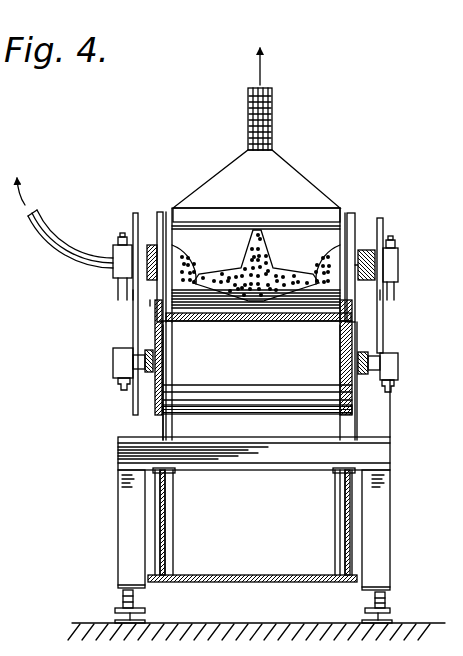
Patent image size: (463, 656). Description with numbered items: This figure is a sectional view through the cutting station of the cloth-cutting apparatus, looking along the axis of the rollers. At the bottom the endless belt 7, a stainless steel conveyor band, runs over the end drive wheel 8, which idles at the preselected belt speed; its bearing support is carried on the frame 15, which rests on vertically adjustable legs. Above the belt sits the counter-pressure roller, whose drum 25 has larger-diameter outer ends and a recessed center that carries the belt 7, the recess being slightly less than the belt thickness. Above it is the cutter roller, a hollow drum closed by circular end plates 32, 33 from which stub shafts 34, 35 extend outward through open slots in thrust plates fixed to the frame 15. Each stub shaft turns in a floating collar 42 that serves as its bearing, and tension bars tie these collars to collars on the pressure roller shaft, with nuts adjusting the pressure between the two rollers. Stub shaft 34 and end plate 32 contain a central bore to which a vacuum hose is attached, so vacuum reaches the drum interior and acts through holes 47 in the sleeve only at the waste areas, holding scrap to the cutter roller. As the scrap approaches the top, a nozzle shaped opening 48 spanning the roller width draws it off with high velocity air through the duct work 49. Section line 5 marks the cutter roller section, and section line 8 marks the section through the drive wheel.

The garment blank transfer system 5 is at (237, 318).
The endless belt 7 is at (234, 576).
The end drive wheel 8 is at (148, 190).
The frame 15 is at (391, 380).
The drum 25 is at (257, 391).
The circular end plate 32 is at (163, 212).
The circular end plate 33 is at (351, 213).
The stub shaft 34 is at (150, 305).
The stub shaft 35 is at (377, 222).
The floating collar 42 is at (121, 270).
The hole 47 is at (263, 276).
The nozzle shaped opening 48 is at (398, 270).
The duct work 49 is at (272, 103).